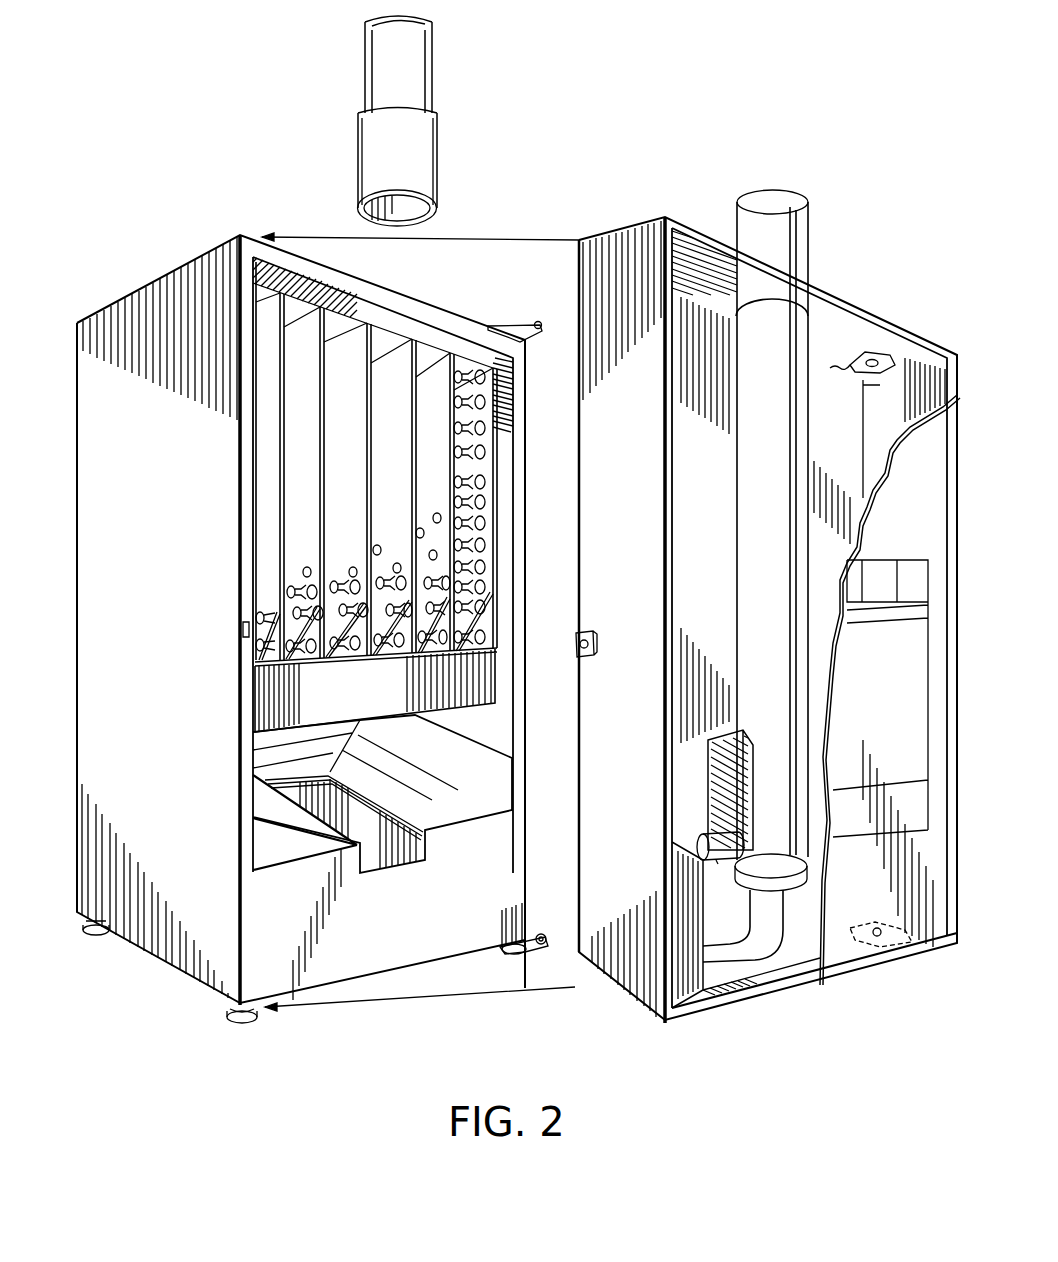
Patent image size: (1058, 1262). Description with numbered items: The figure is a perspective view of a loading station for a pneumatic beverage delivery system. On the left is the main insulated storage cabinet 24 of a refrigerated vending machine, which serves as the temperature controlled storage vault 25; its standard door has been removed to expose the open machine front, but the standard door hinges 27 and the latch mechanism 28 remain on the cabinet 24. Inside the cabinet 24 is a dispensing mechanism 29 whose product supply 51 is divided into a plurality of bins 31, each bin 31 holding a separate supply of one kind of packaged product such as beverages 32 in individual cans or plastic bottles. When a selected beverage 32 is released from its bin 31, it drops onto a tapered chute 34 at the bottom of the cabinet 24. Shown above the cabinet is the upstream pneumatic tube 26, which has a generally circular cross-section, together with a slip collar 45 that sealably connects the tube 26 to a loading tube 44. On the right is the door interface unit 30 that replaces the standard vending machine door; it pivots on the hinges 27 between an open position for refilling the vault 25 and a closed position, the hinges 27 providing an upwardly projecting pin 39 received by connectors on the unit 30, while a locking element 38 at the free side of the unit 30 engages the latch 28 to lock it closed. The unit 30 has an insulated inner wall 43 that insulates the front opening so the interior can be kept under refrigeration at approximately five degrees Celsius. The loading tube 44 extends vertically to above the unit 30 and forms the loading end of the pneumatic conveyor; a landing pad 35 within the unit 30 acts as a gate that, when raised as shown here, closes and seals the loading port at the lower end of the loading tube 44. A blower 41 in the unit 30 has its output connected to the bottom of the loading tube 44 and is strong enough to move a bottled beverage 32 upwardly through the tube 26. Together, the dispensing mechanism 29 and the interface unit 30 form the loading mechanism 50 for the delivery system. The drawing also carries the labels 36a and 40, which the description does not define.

The main insulated storage cabinet 24 is at (140, 527).
The temperature controlled storage vault 25 is at (395, 299).
The pneumatic tube 26 is at (432, 56).
The door hinges 27 is at (503, 324).
The latch mechanism 28 is at (241, 631).
The dispensing mechanism 29 is at (498, 632).
The door interface unit 30 is at (652, 216).
The bins 31 is at (250, 450).
The beverages 32 is at (487, 537).
The tapered chute 34 is at (265, 805).
The landing pad 35 is at (722, 801).
The sensor 36a is at (720, 866).
The locking element 38 is at (585, 660).
The projecting pin 39 is at (855, 370).
The hinge pin 40 is at (541, 321).
The blower 41 is at (682, 891).
The insulated inner wall 43 is at (714, 487).
The loading tube 44 is at (810, 232).
The slip collar 45 is at (437, 146).
The loading mechanism 50 is at (702, 816).
The product supply 51 is at (301, 527).